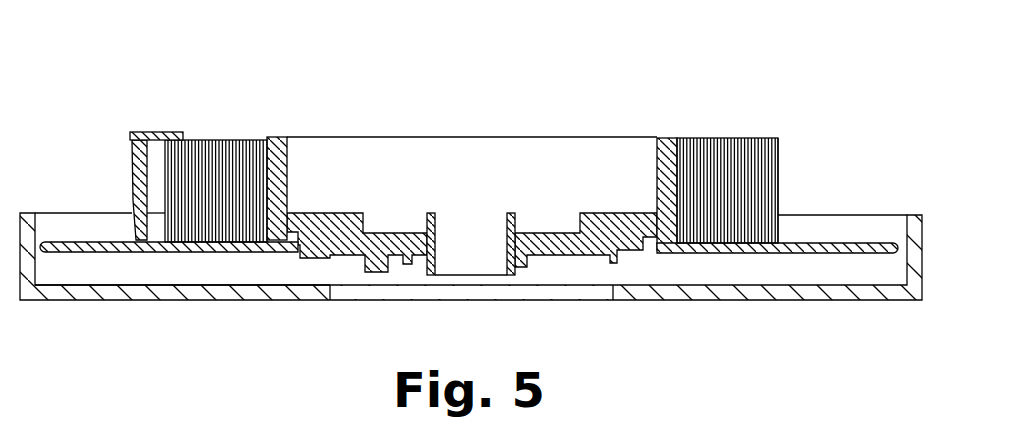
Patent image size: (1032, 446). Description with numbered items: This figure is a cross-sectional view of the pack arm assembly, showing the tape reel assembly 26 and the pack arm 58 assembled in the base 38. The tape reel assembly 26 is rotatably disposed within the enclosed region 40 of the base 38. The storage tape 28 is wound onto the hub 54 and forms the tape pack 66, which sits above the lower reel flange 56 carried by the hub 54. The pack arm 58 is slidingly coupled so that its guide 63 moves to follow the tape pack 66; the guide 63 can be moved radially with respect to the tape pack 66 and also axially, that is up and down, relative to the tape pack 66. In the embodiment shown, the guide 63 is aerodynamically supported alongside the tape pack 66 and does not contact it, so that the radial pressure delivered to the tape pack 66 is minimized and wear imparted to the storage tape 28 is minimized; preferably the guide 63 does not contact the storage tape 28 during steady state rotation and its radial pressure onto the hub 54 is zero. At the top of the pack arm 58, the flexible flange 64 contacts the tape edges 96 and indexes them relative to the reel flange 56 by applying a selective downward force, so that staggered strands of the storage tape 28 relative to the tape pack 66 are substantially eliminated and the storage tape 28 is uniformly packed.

The tape reel assembly 26 is at (807, 196).
The storage tape 28 is at (496, 133).
The base 38 is at (153, 303).
The enclosed region 40 is at (70, 270).
The hub 54 is at (273, 138).
The reel flange 56 is at (858, 243).
The pack arm 58 is at (119, 150).
The guide 63 is at (132, 168).
The flexible flange 64 is at (167, 131).
The tape pack 66 is at (229, 135).
The tape edges 96 is at (748, 138).